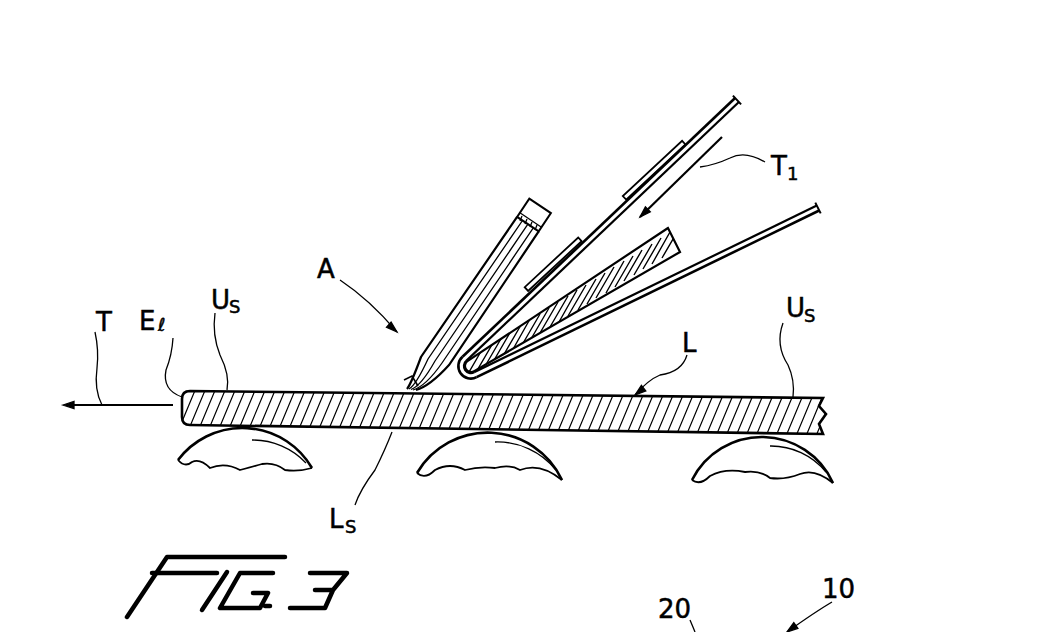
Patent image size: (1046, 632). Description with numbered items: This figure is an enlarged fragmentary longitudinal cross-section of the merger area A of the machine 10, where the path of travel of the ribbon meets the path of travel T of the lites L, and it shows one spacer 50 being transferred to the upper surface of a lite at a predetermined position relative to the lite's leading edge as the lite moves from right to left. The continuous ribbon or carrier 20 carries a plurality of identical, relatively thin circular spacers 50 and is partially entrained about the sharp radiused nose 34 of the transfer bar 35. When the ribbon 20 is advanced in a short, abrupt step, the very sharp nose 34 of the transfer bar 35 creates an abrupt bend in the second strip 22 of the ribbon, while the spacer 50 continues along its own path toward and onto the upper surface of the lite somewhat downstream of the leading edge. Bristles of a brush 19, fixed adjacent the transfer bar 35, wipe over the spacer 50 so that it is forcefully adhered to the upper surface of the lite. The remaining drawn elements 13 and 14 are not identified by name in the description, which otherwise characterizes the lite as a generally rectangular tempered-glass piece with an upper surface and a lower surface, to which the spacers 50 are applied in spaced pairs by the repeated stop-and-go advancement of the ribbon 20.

The machine 10 is at (482, 157).
The substrate 13 is at (835, 472).
The adhesive deposits 14 is at (188, 455).
The brush 19 is at (488, 260).
The ribbon or carrier 20 is at (727, 93).
The second strip 22 is at (728, 110).
The sharp radiused nose 34 is at (488, 372).
The transfer bar 35 is at (675, 226).
The spacer 50 is at (678, 140).